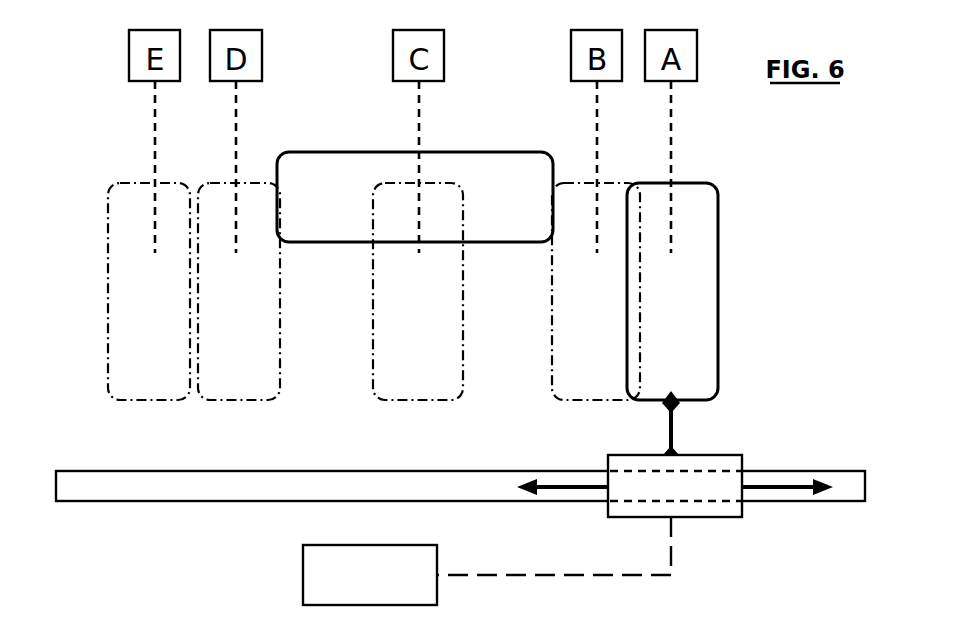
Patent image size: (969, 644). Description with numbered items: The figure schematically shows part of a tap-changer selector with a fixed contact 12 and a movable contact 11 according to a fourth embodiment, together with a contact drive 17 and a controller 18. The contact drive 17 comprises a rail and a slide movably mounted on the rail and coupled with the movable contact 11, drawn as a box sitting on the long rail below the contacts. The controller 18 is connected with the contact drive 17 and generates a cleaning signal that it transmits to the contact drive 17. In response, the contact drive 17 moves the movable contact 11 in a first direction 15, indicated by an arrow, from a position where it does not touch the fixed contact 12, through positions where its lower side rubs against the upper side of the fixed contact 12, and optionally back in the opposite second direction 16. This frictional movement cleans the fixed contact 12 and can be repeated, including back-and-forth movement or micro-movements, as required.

The movable contact 11 is at (659, 305).
The fixed contact 12 is at (309, 212).
The first direction 15 is at (562, 468).
The second direction 16 is at (787, 468).
The contact drive 17 is at (658, 497).
The controller 18 is at (358, 587).